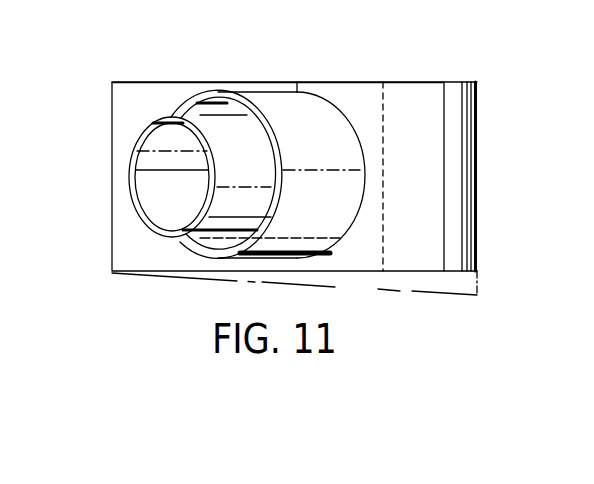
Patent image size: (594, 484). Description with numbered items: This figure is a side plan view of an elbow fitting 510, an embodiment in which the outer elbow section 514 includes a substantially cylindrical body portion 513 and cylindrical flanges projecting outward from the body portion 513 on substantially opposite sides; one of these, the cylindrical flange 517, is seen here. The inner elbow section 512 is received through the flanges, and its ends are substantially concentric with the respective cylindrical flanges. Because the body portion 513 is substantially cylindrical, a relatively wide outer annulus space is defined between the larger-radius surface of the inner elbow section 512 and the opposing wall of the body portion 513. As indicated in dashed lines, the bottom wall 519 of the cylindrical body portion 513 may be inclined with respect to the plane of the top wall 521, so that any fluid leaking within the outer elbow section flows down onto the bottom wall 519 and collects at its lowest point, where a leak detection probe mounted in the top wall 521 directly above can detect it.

The elbow fitting 510 is at (272, 59).
The inner elbow section 512 is at (182, 121).
The cylindrical body portion 513 is at (430, 94).
The outer elbow section 514 is at (478, 114).
The cylindrical flange 517 is at (335, 153).
The bottom wall 519 is at (338, 288).
The top wall 521 is at (200, 82).